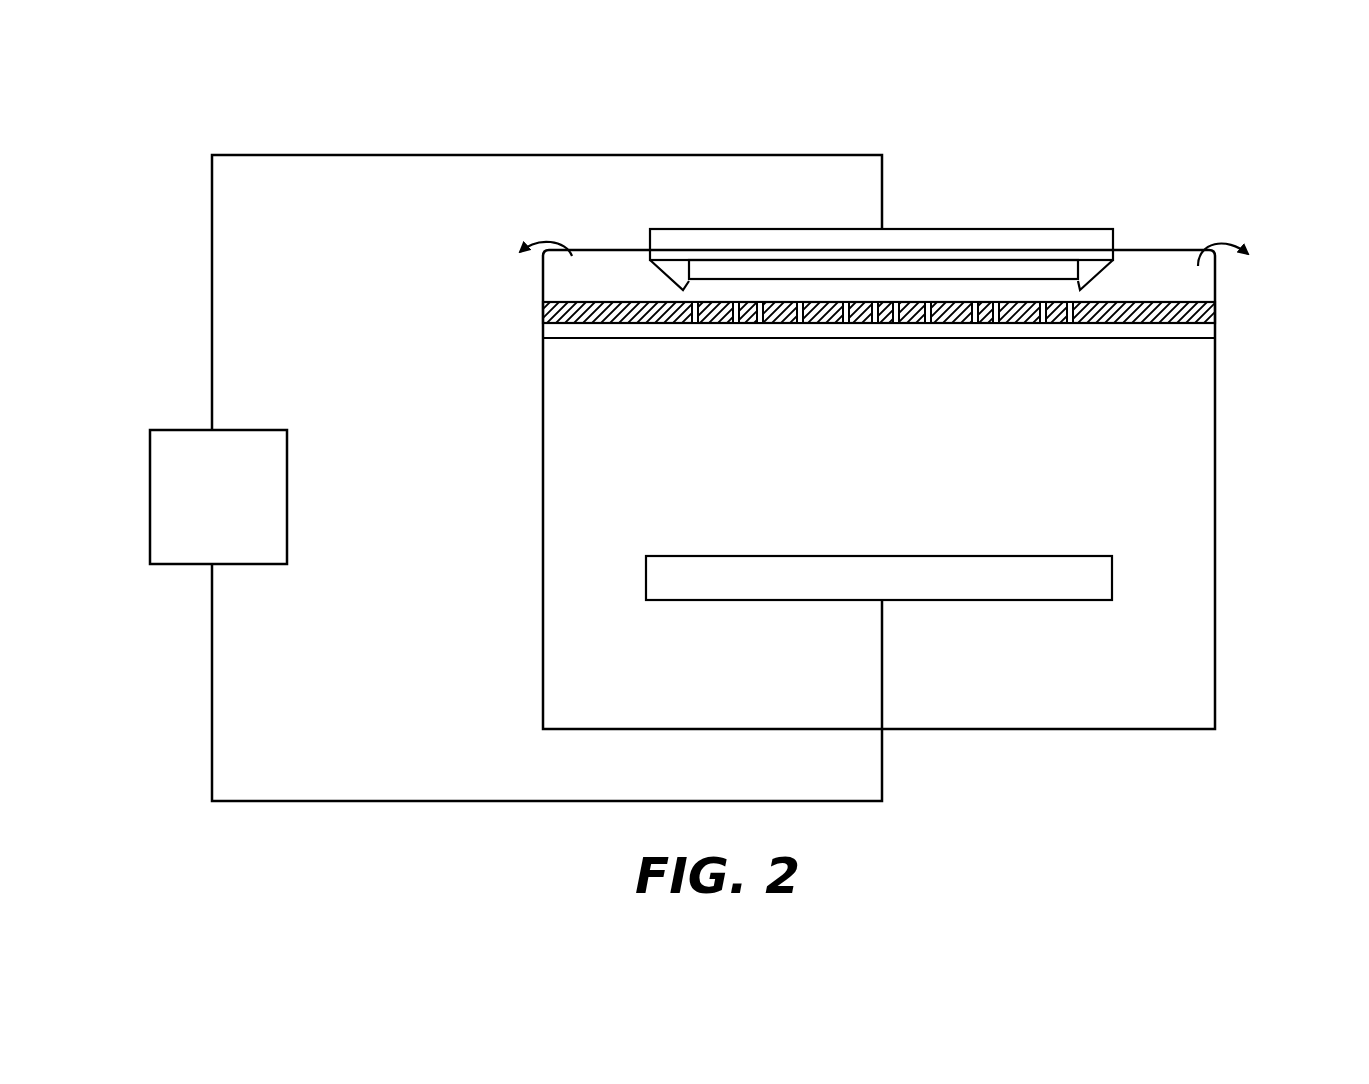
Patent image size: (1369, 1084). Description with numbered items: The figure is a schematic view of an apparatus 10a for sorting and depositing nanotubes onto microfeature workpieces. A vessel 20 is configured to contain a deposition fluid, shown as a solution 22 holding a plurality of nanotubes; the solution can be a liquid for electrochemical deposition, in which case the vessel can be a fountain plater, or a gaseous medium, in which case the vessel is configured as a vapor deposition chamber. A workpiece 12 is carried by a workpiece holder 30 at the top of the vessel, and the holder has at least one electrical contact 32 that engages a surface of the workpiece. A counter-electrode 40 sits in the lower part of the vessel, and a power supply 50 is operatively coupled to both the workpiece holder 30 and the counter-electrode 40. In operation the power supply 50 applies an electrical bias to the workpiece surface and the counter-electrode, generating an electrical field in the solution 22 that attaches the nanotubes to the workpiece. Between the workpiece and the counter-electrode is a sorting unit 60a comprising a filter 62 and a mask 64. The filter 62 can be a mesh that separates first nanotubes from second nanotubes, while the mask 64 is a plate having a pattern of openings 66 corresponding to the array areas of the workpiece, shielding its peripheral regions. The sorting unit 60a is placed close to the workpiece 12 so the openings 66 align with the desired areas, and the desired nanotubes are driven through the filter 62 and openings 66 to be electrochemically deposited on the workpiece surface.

The apparatus 10a is at (934, 132).
The workpiece 12 is at (892, 287).
The vessel 20 is at (1210, 562).
The solution 22 is at (650, 247).
The workpiece holder 30 is at (1090, 228).
The electrical contact 32 is at (1097, 276).
The counter-electrode 40 is at (1112, 578).
The power supply 50 is at (150, 496).
The sorting unit 60a is at (907, 370).
The filter 62 is at (634, 336).
The mask 64 is at (543, 312).
The openings 66 is at (875, 324).